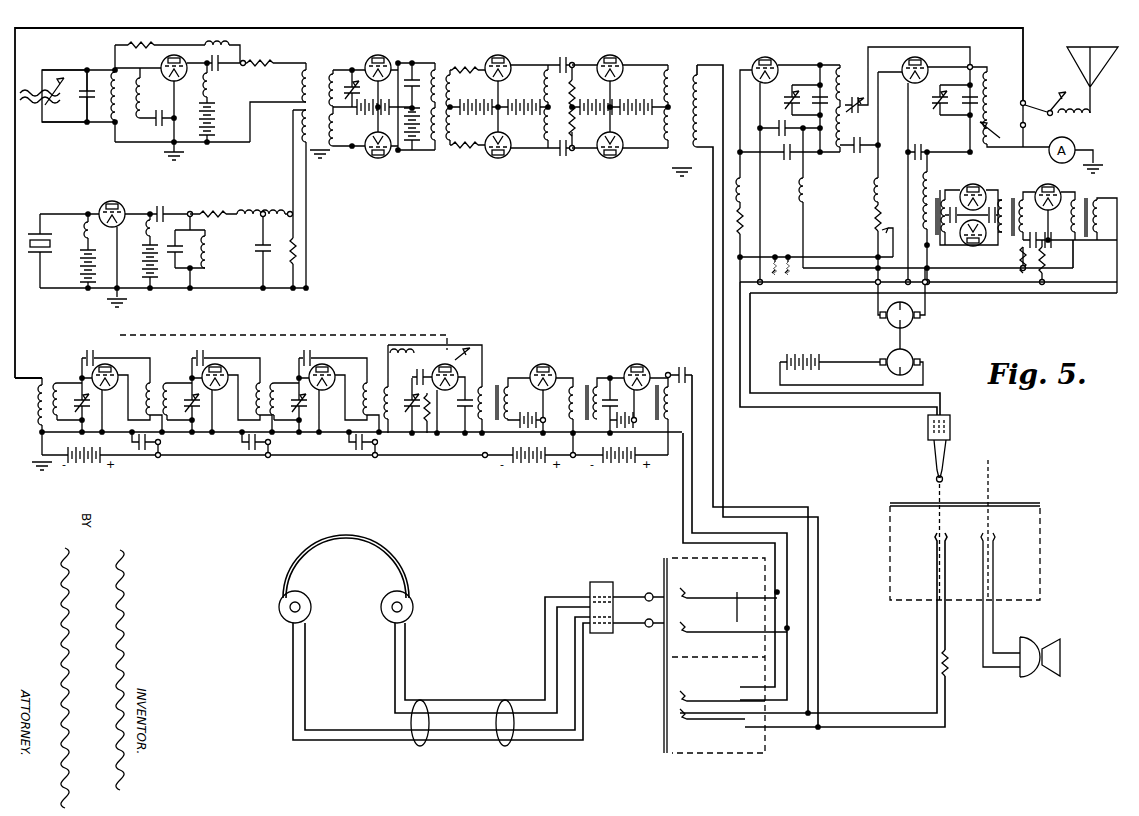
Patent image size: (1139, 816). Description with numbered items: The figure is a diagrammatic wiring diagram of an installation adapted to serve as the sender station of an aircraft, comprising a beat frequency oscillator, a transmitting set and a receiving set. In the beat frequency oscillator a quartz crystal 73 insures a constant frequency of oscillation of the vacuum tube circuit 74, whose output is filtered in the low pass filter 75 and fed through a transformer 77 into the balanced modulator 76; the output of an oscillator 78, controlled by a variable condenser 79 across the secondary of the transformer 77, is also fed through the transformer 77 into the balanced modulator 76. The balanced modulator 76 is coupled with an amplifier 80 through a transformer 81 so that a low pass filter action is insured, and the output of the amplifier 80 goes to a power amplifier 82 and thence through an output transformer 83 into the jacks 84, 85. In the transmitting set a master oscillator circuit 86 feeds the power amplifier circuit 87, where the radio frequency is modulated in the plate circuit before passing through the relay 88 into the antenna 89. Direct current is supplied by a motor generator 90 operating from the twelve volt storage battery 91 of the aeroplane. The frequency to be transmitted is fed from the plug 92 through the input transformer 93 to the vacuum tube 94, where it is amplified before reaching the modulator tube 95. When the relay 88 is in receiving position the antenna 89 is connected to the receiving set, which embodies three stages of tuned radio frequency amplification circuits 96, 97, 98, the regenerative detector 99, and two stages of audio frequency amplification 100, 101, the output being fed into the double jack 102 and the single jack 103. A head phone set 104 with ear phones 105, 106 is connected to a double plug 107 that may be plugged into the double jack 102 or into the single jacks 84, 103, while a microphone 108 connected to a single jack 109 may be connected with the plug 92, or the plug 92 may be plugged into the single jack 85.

The quartz crystal 73 is at (34, 228).
The vacuum tube circuit 74 is at (112, 201).
The low pass filter 75 is at (258, 210).
The balanced modulator 76 is at (400, 98).
The transformer 77 is at (320, 148).
The oscillator 78 is at (160, 58).
The variable condenser 79 is at (353, 68).
The amplifier 80 is at (510, 98).
The transformer 81 is at (441, 68).
The power amplifier 82 is at (620, 98).
The output transformer 83 is at (682, 165).
The jack 84 is at (712, 709).
The jack 85 is at (933, 584).
The master oscillator circuit 86 is at (770, 58).
The power amplifier circuit 87 is at (916, 57).
The relay 88 is at (1046, 106).
The antenna 89 is at (1068, 63).
The motor generator 90 is at (896, 330).
The storage battery 91 is at (805, 352).
The plug 92 is at (926, 428).
The input transformer 93 is at (1087, 196).
The vacuum tube 94 is at (1048, 184).
The modulator tube 95 is at (978, 186).
The tuned radio frequency amplification circuit 96 is at (120, 336).
The tuned radio frequency amplification circuit 97 is at (232, 337).
The tuned radio frequency amplification circuit 98 is at (341, 337).
The regenerative detector 99 is at (460, 378).
The audio frequency amplification stage 100 is at (552, 404).
The audio frequency amplification stage 101 is at (644, 401).
The double jack 102 is at (740, 592).
The single jack 103 is at (722, 688).
The head phone set 104 is at (347, 535).
The ear phone 105 is at (313, 600).
The ear phone 106 is at (381, 610).
The double plug 107 is at (633, 633).
The microphone 108 is at (1026, 675).
The single jack 109 is at (996, 576).